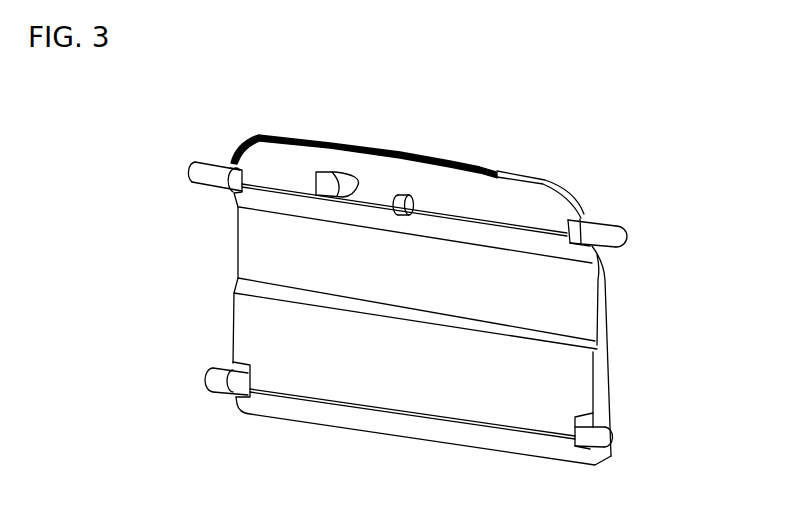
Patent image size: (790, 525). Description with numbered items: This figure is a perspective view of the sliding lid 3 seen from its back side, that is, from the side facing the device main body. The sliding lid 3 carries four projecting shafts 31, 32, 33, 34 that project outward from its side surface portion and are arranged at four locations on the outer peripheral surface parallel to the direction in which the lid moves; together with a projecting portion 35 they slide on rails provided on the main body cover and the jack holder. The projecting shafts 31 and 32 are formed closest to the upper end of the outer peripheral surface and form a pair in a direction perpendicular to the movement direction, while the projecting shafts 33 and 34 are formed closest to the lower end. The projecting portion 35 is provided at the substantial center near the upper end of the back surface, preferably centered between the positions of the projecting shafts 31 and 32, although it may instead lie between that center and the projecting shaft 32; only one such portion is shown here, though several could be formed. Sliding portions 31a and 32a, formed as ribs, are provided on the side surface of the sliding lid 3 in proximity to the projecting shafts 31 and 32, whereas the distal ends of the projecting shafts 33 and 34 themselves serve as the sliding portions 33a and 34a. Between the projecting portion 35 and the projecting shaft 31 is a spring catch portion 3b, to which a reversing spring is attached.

The sliding lid 3 is at (501, 119).
The spring catch portion 3b is at (323, 183).
The projecting portion 35 is at (402, 196).
The projecting shaft 31 is at (158, 168).
The sliding portion 31a is at (231, 163).
The projecting shaft 32 is at (650, 168).
The sliding portion 32a is at (585, 205).
The projecting shaft 33 is at (162, 426).
The sliding portion 33a is at (213, 380).
The projecting shaft 34 is at (660, 405).
The sliding portion 34a is at (610, 437).